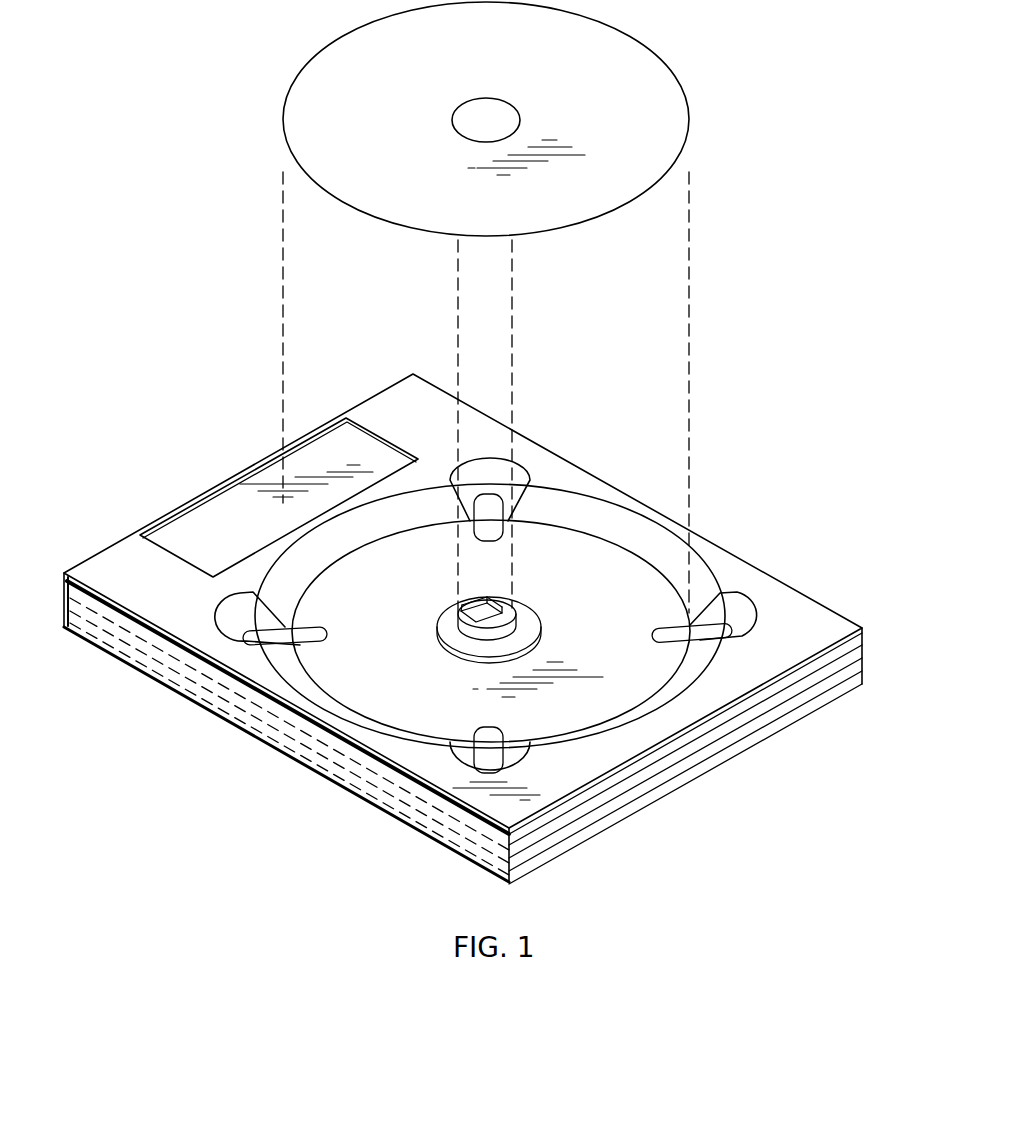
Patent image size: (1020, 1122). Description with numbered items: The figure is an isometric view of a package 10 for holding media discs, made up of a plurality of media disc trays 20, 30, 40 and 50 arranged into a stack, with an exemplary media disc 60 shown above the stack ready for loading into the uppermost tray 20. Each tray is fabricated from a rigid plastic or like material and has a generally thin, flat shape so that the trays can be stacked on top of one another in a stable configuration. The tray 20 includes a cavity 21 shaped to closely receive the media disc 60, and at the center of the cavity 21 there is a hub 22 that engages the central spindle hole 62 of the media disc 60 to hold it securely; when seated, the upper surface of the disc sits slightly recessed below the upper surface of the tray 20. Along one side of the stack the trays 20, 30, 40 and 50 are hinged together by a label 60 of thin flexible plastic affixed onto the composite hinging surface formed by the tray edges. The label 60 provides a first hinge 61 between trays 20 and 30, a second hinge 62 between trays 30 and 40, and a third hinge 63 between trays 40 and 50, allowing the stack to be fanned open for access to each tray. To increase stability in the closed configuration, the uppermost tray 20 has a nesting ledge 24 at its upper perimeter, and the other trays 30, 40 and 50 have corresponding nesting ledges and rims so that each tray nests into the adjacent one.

The package 10 is at (760, 478).
The media disc tray 20 is at (707, 733).
The cavity 21 is at (604, 577).
The hub 22 is at (456, 628).
The nesting ledge 24 is at (808, 660).
The media disc tray 30 is at (708, 751).
The media disc tray 40 is at (708, 765).
The media disc tray 50 is at (708, 781).
The media disc 60 is at (636, 42).
The first hinge 61 is at (496, 100).
The second hinge 62 is at (78, 614).
The third hinge 63 is at (92, 634).